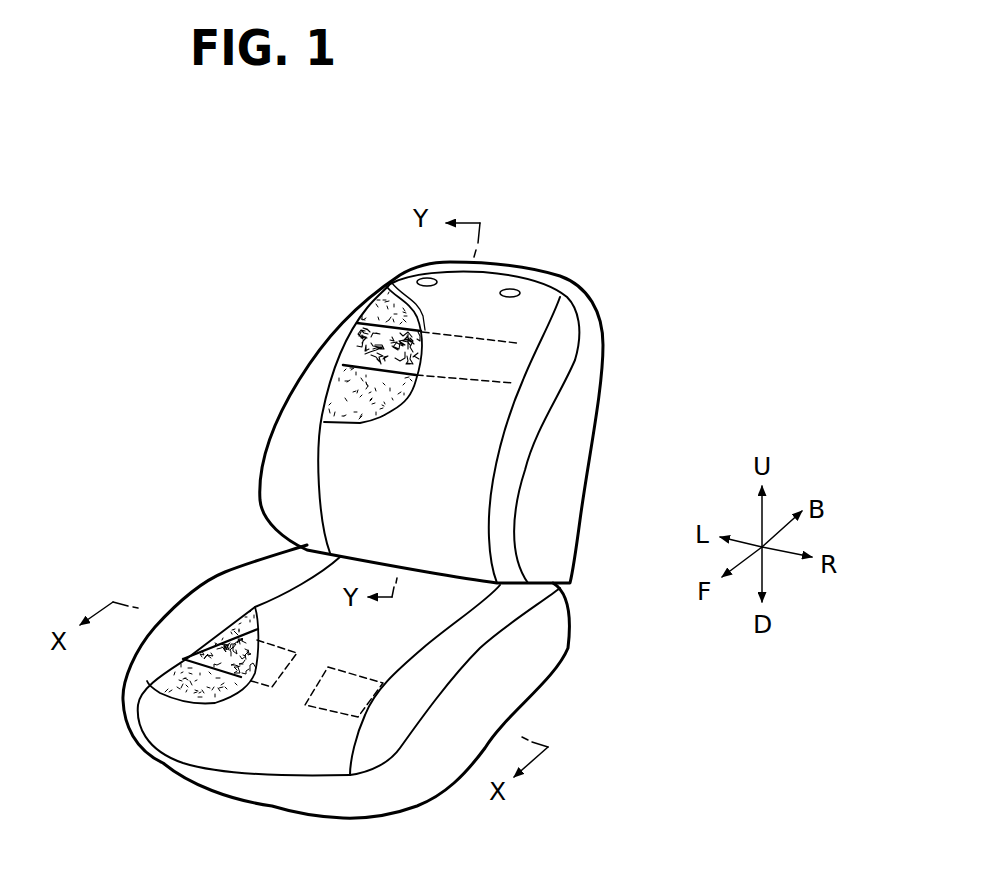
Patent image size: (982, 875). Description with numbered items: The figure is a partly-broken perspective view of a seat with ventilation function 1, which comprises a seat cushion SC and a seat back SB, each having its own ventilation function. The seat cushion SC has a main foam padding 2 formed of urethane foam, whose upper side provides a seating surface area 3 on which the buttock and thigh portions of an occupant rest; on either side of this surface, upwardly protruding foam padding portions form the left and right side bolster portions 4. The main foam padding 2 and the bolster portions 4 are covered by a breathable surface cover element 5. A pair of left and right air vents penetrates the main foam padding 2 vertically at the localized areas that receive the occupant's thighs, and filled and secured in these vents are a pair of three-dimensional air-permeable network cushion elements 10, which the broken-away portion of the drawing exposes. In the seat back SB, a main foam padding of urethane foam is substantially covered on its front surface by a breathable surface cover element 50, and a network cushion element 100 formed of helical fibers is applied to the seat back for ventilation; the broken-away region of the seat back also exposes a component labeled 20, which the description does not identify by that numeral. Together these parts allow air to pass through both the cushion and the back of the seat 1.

The seat with ventilation function 1 is at (226, 453).
The seat back SB is at (558, 452).
The seat cushion SC is at (518, 676).
The main foam padding 2 is at (160, 673).
The seating surface area 3 is at (240, 730).
The side bolster portions 4 is at (263, 587).
The breathable surface cover element 5 is at (207, 720).
The three-dimensional air-permeable network cushion element 10 is at (209, 647).
The back pad 20 is at (360, 393).
The breathable surface cover element 50 is at (338, 445).
The network cushion element 100 is at (365, 323).